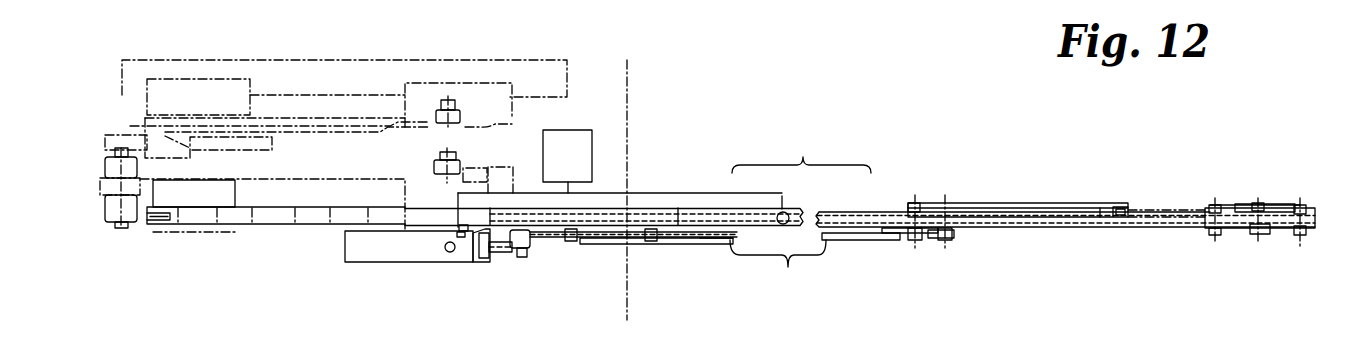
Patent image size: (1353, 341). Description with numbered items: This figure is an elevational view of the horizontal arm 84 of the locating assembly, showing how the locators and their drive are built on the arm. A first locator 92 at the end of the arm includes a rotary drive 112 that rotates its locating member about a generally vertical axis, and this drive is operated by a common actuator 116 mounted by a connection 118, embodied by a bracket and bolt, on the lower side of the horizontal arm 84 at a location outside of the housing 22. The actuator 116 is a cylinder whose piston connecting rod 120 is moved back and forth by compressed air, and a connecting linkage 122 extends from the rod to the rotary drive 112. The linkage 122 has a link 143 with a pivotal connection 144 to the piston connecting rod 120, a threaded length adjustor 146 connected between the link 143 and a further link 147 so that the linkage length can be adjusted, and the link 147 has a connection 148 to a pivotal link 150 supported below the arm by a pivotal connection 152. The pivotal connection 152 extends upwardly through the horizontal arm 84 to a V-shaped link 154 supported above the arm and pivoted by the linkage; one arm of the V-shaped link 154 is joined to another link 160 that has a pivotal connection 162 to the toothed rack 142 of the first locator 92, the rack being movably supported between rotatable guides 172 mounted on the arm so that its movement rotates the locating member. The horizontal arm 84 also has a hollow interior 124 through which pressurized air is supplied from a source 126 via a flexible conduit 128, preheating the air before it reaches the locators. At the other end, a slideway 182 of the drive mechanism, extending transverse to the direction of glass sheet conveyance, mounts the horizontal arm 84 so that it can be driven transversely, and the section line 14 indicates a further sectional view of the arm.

The section line 14- 14 is at (400, 192).
The housing 22 is at (626, 300).
The horizontal arm 84 is at (801, 149).
The first locator 92 is at (1291, 210).
The rotary drive 112 is at (1195, 199).
The actuator 116 is at (423, 258).
The connection 118 is at (470, 256).
The piston connecting rod 120 is at (505, 251).
The connecting linkage 122 is at (715, 247).
The hollow interior 124 is at (722, 214).
The source 126 is at (562, 130).
The flexible conduit 128 is at (560, 193).
The toothed rack 142 is at (1160, 205).
The link 143 is at (556, 242).
The pivotal connection 144 is at (538, 240).
The threaded length adjustor 146 is at (656, 268).
The link 147 is at (778, 269).
The connection 148 is at (913, 241).
The pivotal link 150 is at (943, 241).
The pivotal connection 152 is at (955, 238).
The V-shaped link 154 is at (968, 205).
The link 160 is at (1048, 207).
The pivotal connection 162 is at (1127, 216).
The rotatable guides 172 is at (1204, 223).
The slideway 182 is at (147, 95).